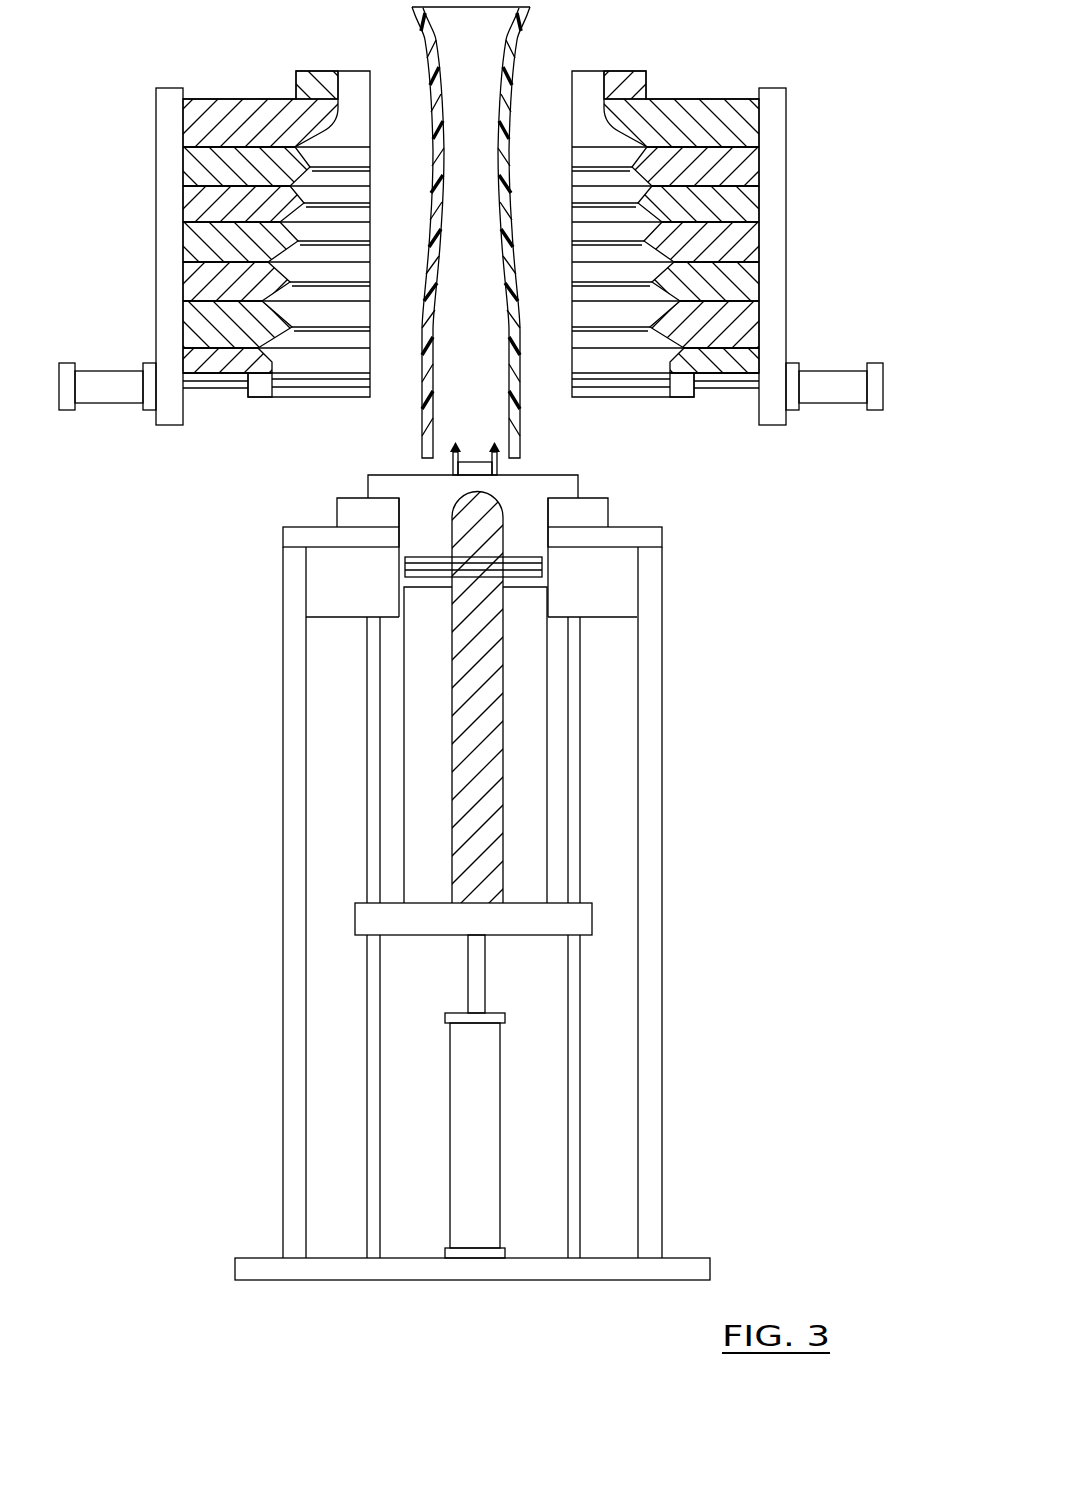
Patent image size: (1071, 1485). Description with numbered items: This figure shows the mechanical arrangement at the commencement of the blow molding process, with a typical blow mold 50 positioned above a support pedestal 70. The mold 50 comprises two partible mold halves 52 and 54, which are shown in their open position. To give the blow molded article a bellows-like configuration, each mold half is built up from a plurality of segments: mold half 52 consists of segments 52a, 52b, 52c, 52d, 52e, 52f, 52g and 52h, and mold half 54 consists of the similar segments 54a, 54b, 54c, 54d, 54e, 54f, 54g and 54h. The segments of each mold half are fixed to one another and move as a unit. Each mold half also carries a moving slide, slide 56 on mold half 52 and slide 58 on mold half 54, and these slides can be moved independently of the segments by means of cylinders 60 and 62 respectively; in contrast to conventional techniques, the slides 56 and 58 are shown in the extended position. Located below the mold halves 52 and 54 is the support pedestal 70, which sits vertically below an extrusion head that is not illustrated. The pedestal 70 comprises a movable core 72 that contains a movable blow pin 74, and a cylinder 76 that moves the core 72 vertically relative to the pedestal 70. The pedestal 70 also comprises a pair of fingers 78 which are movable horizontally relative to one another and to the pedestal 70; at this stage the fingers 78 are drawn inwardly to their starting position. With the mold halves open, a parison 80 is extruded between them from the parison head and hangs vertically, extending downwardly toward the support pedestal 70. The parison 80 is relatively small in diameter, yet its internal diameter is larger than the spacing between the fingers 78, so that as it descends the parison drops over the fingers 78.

The blow mold 50 is at (160, 52).
The mold half 52 is at (157, 181).
The segment 52a is at (300, 86).
The segment 52b is at (186, 116).
The segment 52c is at (195, 162).
The segment 52d is at (187, 200).
The segment 52e is at (188, 238).
The segment 52f is at (192, 282).
The segment 52g is at (192, 320).
The segment 52h is at (195, 360).
The mold half 54 is at (778, 183).
The segment 54a is at (645, 86).
The segment 54b is at (757, 120).
The segment 54c is at (750, 165).
The segment 54d is at (745, 205).
The segment 54e is at (750, 245).
The segment 54f is at (745, 285).
The segment 54g is at (748, 322).
The segment 54h is at (750, 360).
The moving slide 56 is at (250, 393).
The moving slide 58 is at (688, 397).
The cylinder 60 is at (98, 403).
The cylinder 62 is at (880, 388).
The support pedestal 70 is at (715, 893).
The movable core 72 is at (533, 740).
The movable blow pin 74 is at (452, 680).
The cylinder 76 is at (492, 1140).
The fingers 78 is at (453, 468).
The parison 80 is at (520, 32).